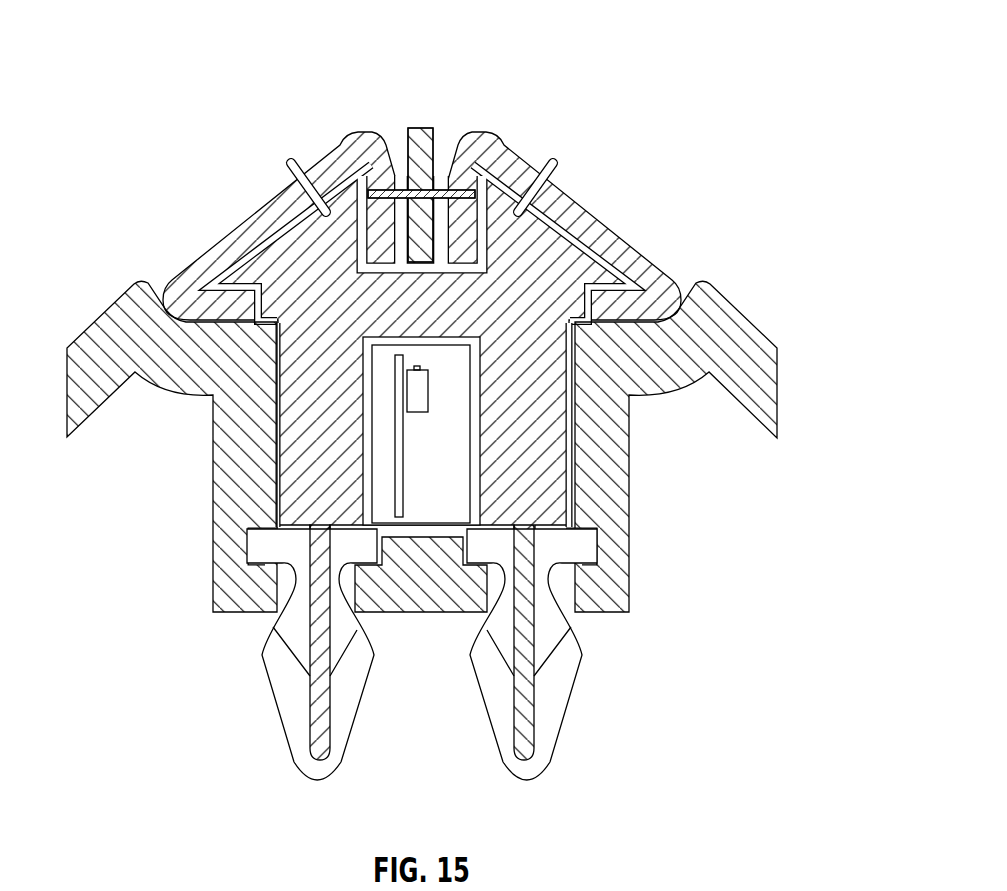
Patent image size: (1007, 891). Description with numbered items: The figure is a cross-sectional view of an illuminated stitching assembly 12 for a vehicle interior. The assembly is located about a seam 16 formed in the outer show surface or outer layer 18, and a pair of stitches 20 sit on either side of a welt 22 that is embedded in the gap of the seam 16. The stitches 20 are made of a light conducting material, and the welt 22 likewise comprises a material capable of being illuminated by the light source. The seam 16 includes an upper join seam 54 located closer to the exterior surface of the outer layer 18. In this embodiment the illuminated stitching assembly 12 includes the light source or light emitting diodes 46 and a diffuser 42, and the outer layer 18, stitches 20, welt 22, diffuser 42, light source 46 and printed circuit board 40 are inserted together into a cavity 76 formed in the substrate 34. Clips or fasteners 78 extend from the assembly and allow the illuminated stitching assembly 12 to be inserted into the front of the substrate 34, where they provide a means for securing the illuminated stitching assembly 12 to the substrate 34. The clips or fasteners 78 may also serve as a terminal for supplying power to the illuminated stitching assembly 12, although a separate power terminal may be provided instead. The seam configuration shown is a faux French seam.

The illuminated stitching assembly 12 is at (760, 60).
The seam 16 is at (413, 121).
The outer layer 18 is at (627, 260).
The stitches 20 is at (290, 160).
The welt 22 is at (428, 135).
The substrate 34 is at (668, 365).
The printed circuit board 40 is at (405, 455).
The diffuser 42 is at (490, 253).
The light emitting diodes 46 is at (428, 383).
The upper join seam 54 is at (400, 188).
The cavity 76 is at (270, 472).
The clips or fasteners 78 is at (297, 710).